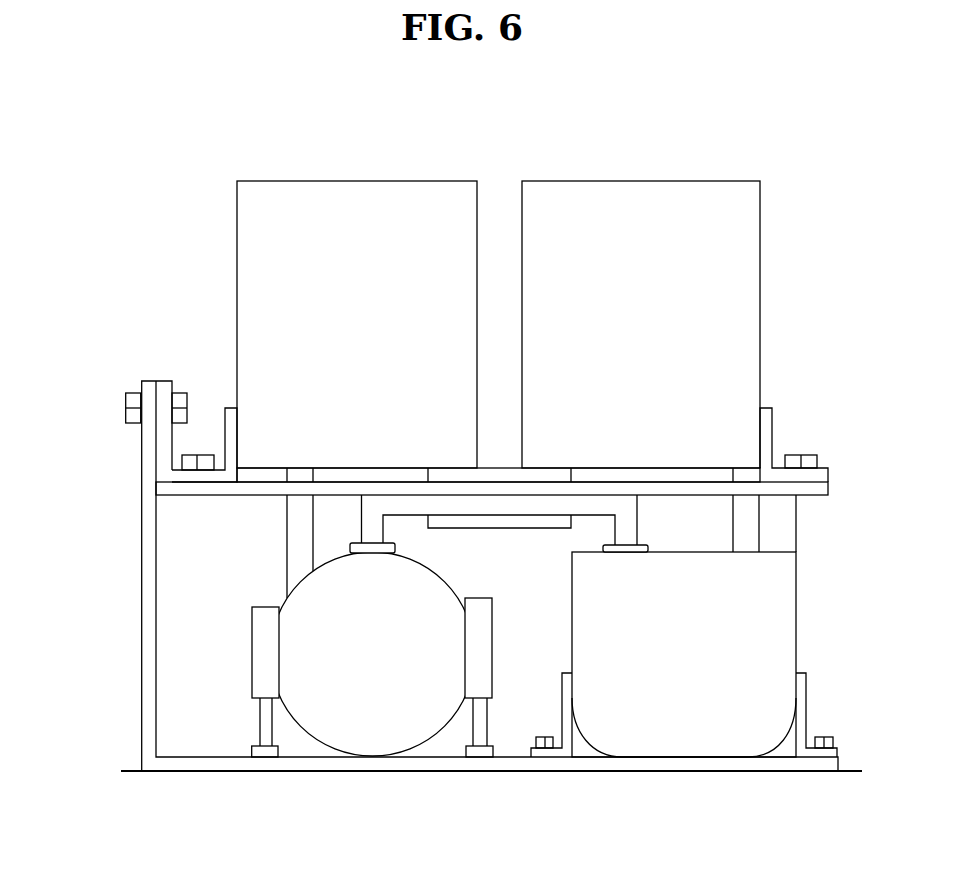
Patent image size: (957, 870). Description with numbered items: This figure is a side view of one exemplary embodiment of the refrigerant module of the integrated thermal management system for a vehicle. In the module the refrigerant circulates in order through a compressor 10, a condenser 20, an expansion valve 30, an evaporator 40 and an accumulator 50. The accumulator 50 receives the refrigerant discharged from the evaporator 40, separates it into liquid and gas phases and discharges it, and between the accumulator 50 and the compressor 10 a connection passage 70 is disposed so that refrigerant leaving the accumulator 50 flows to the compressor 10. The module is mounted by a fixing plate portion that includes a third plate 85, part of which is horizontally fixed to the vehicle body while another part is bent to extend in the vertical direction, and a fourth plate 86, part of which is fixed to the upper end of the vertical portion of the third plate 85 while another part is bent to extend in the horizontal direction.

The compressor 10 is at (340, 722).
The condenser 20 is at (356, 200).
The expansion valve 30 is at (553, 475).
The evaporator 40 is at (693, 200).
The accumulator 50 is at (683, 723).
The connection passage 70 is at (625, 522).
The third plate 85 is at (148, 657).
The fourth plate 86 is at (200, 490).